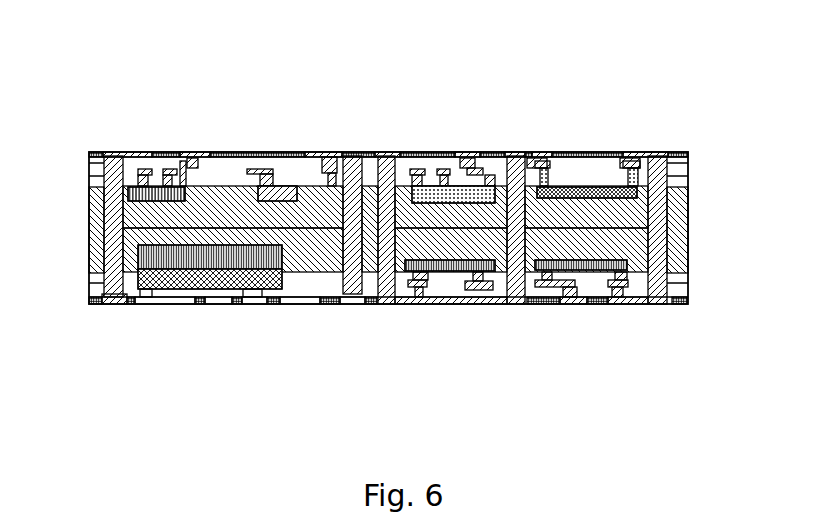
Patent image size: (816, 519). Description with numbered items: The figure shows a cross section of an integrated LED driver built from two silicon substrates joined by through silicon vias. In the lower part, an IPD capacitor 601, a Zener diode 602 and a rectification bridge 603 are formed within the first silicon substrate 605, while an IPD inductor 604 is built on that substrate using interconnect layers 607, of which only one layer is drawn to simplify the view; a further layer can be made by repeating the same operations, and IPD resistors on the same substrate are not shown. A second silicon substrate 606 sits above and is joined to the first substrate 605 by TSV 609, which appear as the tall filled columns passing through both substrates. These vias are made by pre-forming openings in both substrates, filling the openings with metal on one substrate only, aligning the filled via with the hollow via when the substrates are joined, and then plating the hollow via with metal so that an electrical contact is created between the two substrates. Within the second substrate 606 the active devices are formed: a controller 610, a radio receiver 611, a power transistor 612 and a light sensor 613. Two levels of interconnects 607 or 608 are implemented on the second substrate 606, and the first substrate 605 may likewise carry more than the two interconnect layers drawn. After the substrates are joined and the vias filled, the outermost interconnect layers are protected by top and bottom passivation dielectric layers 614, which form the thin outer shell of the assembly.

The IPD capacitor 601 is at (190, 258).
The Zener diode 602 is at (460, 268).
The rectification bridge 603 is at (598, 265).
The IPD inductor 604 is at (245, 278).
The silicon substrate 605 is at (682, 250).
The second silicon substrate 606 is at (682, 213).
The interconnect layer 607 is at (447, 174).
The interconnect 608 is at (350, 188).
The TSV 609 is at (122, 198).
The controller 610 is at (184, 194).
The radio receiver 611 is at (310, 193).
The power transistor 612 is at (487, 195).
The light sensor 613 is at (612, 192).
The passivation dielectric layer 614 is at (687, 153).